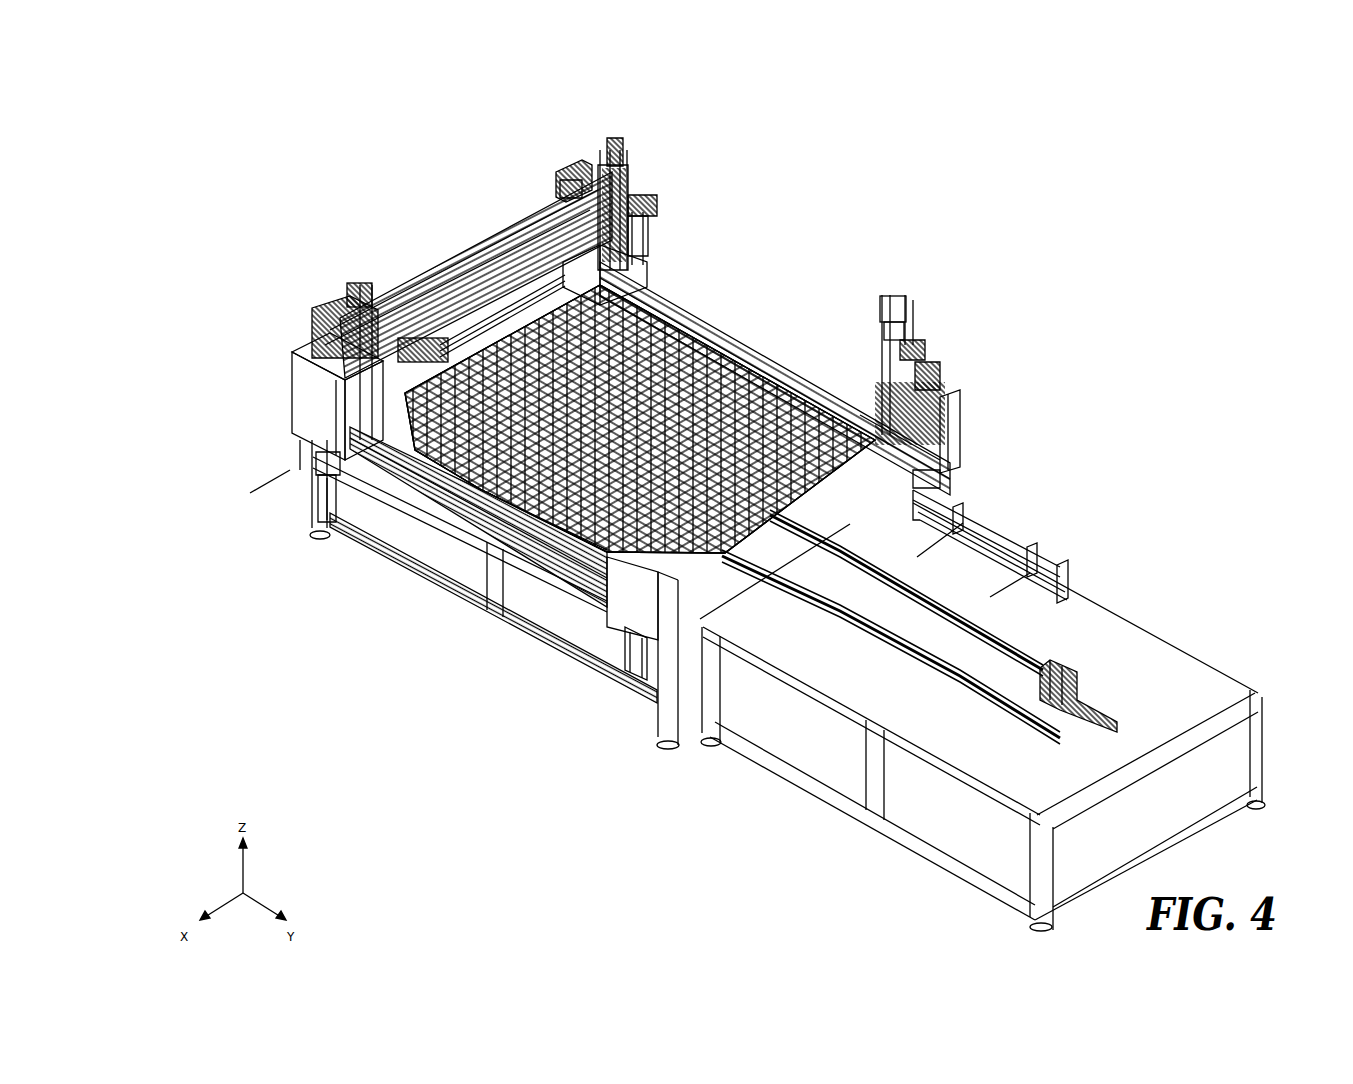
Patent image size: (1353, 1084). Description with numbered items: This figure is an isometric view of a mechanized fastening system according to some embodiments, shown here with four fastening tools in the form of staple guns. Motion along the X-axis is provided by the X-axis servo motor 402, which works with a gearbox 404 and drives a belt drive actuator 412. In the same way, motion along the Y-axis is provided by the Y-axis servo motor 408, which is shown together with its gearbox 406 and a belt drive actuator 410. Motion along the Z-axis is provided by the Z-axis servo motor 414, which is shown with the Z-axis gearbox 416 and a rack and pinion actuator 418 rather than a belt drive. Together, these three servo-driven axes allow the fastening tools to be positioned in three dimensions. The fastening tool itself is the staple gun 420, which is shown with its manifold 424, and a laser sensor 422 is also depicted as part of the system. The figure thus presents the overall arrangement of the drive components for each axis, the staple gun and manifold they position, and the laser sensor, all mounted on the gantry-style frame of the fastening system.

The X-axis servo motor 402 is at (575, 185).
The gearbox 404 is at (565, 186).
The gearbox 406 is at (318, 452).
The Y-axis servo motor 408 is at (312, 498).
The belt drive actuator 410 is at (465, 507).
The belt drive actuator 412 is at (700, 474).
The Z-axis servo motor 414 is at (932, 372).
The Z-axis gearbox 416 is at (910, 350).
The rack and pinion actuator 418 is at (627, 188).
The staple gun 420 is at (633, 235).
The laser sensor 422 is at (408, 343).
The manifold 424 is at (628, 173).